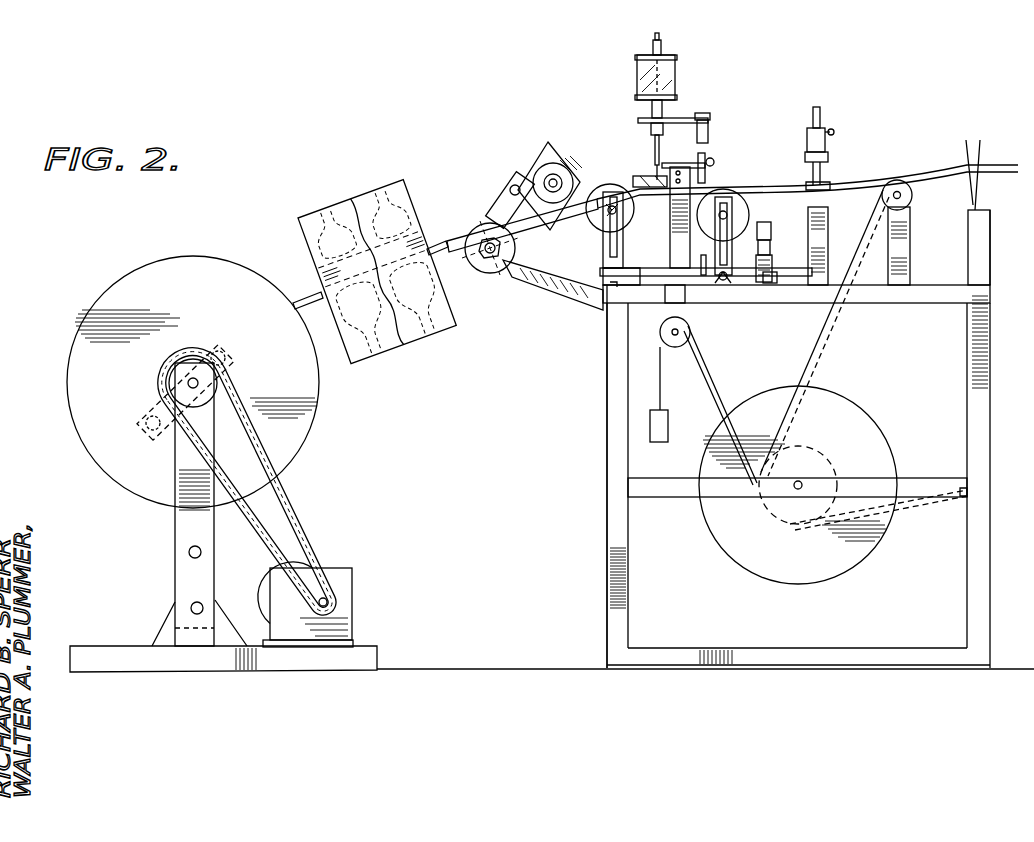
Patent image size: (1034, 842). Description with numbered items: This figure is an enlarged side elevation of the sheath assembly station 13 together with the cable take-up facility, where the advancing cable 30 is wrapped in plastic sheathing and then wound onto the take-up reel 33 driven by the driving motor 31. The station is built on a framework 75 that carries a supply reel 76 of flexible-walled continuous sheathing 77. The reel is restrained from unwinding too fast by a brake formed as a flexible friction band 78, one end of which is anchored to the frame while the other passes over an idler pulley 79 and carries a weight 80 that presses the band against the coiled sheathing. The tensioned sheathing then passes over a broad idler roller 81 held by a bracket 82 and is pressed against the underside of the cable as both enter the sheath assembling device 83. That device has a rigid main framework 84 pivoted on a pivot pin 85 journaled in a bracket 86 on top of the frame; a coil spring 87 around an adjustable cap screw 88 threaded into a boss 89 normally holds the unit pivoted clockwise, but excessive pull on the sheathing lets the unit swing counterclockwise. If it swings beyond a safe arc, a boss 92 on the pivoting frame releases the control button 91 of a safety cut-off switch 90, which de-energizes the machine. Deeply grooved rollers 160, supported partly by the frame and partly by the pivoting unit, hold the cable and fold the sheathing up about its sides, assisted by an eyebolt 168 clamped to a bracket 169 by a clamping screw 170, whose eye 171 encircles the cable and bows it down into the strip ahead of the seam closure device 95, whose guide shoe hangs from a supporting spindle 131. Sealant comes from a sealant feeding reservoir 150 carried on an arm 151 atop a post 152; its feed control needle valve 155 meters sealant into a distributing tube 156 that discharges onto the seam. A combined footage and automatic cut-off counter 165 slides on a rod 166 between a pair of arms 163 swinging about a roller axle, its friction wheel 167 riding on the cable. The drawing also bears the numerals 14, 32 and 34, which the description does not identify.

The sheath assembly station 13 is at (598, 465).
The motor 14 is at (362, 600).
The cable 30 is at (302, 297).
The driving motor 31 is at (320, 567).
The drive chain 32 is at (284, 497).
The take-up reel 33 is at (78, 405).
The cut strip section with patterns 34 is at (349, 200).
The framework 75 is at (608, 411).
The supply reel 76 is at (753, 565).
The sheathing 77 is at (832, 347).
The flexible friction band 78 is at (923, 500).
The idler pulley 79 is at (677, 342).
The weight 80 is at (662, 442).
The idler roller 81 is at (913, 190).
The bracket 82 is at (903, 252).
The sheath assembling device 83 is at (723, 157).
The main framework 84 is at (613, 302).
The pivot pin 85 is at (720, 283).
The bracket 86 is at (735, 280).
The coil spring 87 is at (773, 264).
The adjustable cap screw 88 is at (773, 248).
The boss 89 is at (777, 283).
The safety cut-off switch 90 is at (773, 228).
The control button 91 is at (747, 222).
The boss 92 is at (750, 235).
The seam closure device 95 is at (635, 173).
The supporting spindle 131 is at (712, 177).
The sealant feeding reservoir 150 is at (670, 70).
The arm 151 is at (682, 117).
The post 152 is at (708, 133).
The feed control needle valve 155 is at (652, 45).
The distributing tube 156 is at (657, 153).
The deeply grooved rollers 160 is at (490, 267).
The arms 163 is at (502, 210).
The footage and automatic cut-off counter 165 is at (537, 150).
The rod 166 is at (513, 190).
The friction wheel 167 is at (552, 160).
The eyebolt 168 is at (827, 152).
The bracket 169 is at (828, 165).
The clamping screw 170 is at (828, 130).
The eye 171 is at (810, 173).